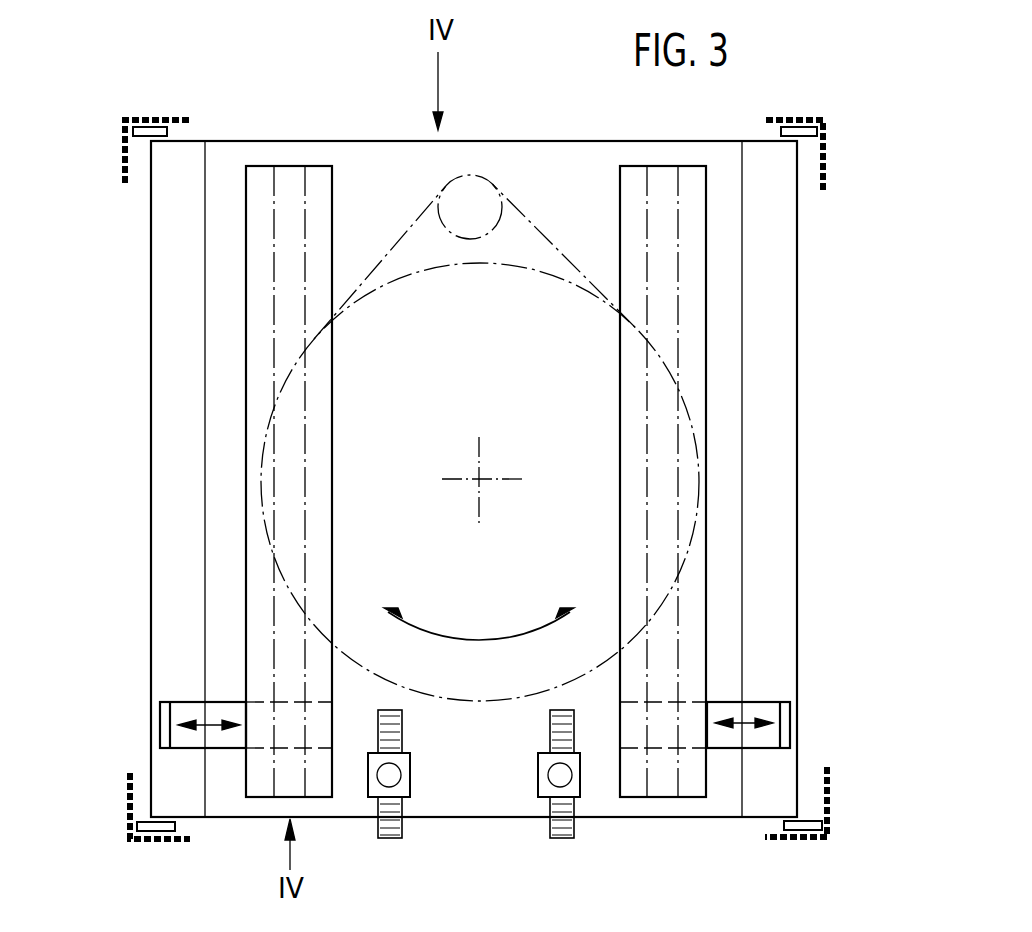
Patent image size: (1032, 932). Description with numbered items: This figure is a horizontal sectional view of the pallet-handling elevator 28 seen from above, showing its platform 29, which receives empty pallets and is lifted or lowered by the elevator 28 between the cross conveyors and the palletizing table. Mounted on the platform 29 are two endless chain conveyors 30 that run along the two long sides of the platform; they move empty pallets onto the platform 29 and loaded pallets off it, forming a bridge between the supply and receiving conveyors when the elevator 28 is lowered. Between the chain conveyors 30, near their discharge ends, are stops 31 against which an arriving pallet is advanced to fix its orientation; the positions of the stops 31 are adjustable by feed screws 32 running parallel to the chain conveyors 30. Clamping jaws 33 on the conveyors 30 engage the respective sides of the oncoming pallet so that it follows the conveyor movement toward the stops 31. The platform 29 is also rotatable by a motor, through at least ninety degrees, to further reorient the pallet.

The elevator 28 is at (772, 428).
The platform 29 is at (567, 428).
The endless chain conveyors 30 is at (288, 180).
The stops 31 is at (392, 775).
The feed screws 32 is at (383, 838).
The clamping jaws 33 is at (158, 716).